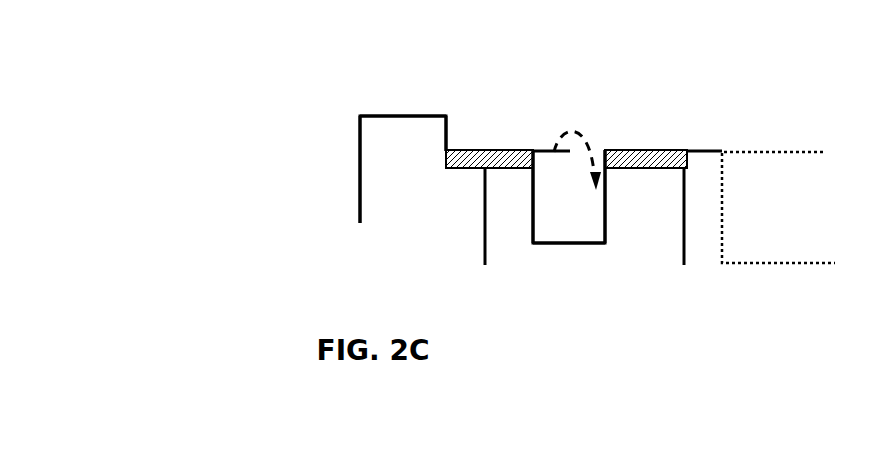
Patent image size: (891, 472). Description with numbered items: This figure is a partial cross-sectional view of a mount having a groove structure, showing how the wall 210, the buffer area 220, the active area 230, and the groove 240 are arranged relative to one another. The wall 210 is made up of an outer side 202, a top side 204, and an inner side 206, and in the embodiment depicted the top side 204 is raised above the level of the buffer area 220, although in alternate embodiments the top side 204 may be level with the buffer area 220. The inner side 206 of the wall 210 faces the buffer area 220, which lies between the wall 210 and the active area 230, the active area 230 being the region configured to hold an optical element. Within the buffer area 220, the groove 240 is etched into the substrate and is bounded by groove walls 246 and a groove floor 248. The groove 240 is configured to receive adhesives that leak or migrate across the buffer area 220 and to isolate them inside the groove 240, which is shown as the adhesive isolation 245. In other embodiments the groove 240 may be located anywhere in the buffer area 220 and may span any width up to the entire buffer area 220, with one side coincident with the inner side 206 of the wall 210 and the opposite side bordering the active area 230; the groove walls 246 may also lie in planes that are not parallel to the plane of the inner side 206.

The outer side 202 is at (355, 165).
The top side 204 is at (420, 110).
The inner side 206 is at (447, 192).
The wall 210 is at (382, 182).
The buffer area 220 is at (682, 168).
The active area 230 is at (757, 213).
The groove 240 is at (532, 150).
The adhesive isolation 245 is at (557, 150).
The groove walls 246 is at (520, 207).
The groove floor 248 is at (594, 263).